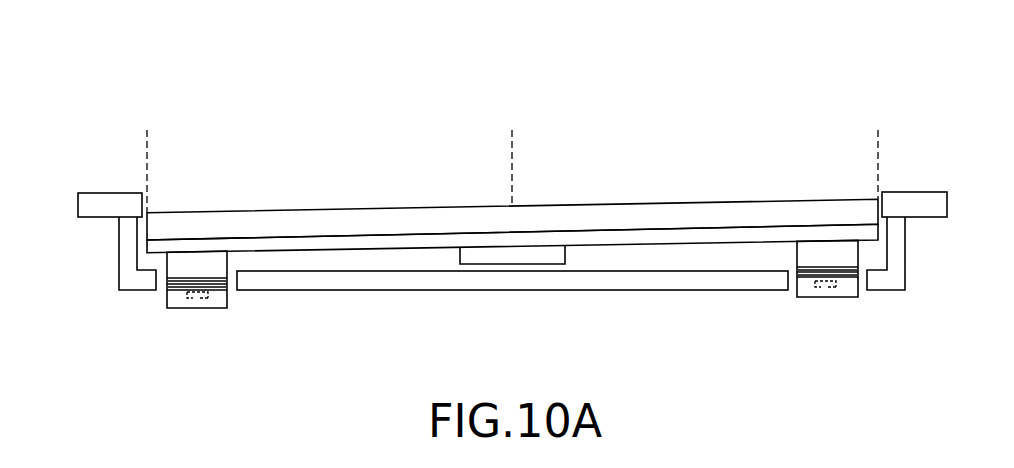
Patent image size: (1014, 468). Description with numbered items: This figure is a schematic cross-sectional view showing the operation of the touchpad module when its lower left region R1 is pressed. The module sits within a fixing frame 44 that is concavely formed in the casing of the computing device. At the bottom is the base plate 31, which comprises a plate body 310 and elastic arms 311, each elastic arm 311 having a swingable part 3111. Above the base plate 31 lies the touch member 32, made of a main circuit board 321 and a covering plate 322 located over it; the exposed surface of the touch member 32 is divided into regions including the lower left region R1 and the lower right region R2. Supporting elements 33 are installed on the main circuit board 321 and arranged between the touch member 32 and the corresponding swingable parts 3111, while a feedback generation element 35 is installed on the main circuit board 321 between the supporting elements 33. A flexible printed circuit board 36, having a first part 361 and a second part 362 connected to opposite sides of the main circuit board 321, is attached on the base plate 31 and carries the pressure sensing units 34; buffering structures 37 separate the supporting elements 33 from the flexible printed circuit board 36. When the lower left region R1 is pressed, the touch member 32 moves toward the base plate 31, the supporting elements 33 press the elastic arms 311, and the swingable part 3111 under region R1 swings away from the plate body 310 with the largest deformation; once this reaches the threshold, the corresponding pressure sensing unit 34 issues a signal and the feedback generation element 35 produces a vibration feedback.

The base plate 31 is at (105, 38).
The plate body 310 is at (472, 282).
The elastic arm 311 is at (483, 184).
The swingable part 3111 is at (177, 298).
The touch member 32 is at (432, 173).
The main circuit board 321 is at (510, 243).
The covering plate 322 is at (392, 207).
The supporting element 33 is at (198, 262).
The pressure sensing unit 34 is at (208, 297).
The feedback generation element 35 is at (523, 255).
The flexible printed circuit board 36 is at (222, 38).
The first part 361 is at (923, 277).
The second part 362 is at (103, 290).
The buffering structure 37 is at (228, 282).
The fixing frame 44 is at (110, 202).
The lower left region R1 is at (510, 130).
The lower right region R2 is at (878, 130).